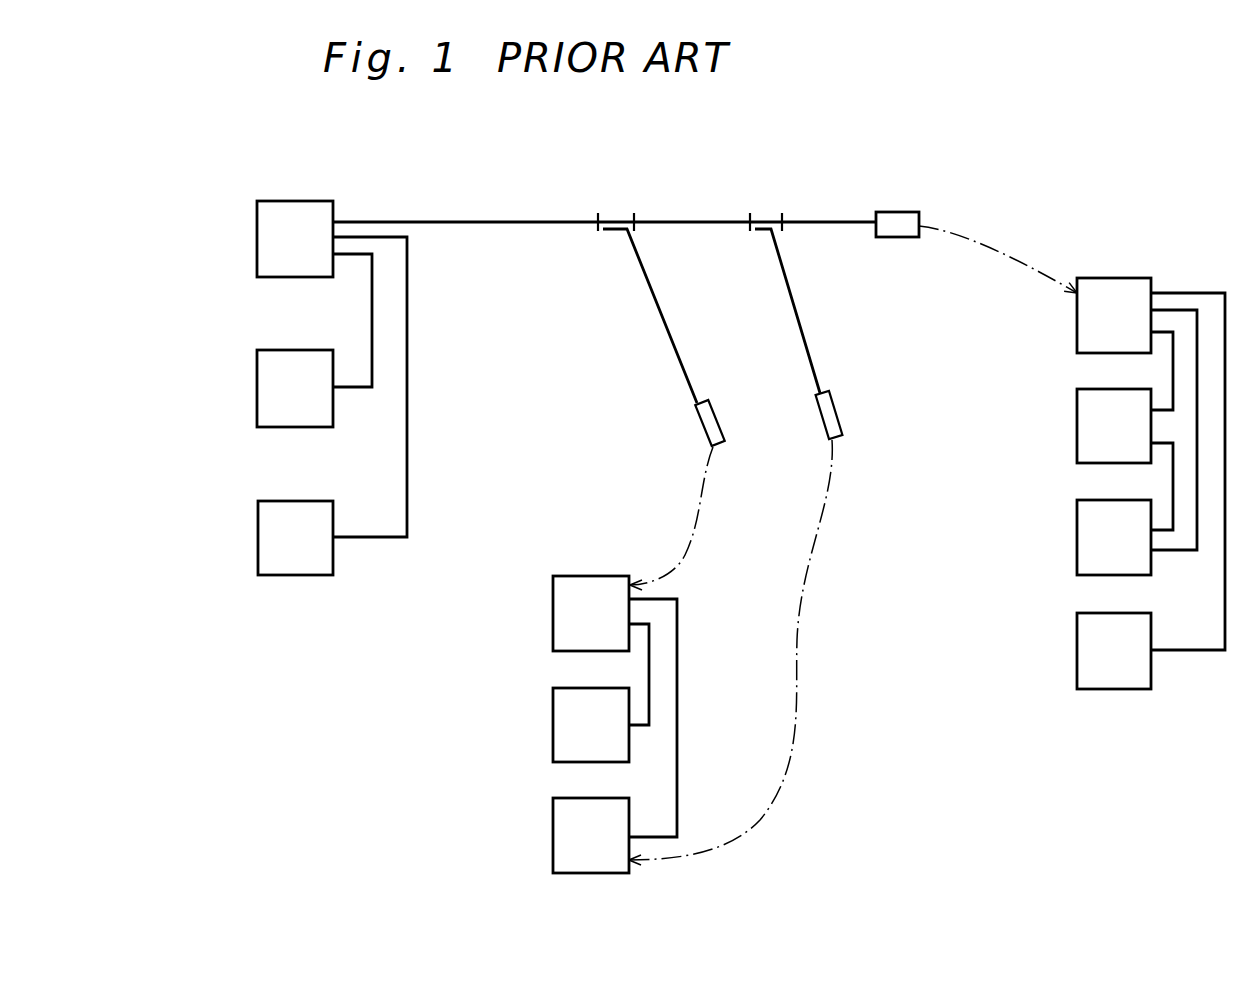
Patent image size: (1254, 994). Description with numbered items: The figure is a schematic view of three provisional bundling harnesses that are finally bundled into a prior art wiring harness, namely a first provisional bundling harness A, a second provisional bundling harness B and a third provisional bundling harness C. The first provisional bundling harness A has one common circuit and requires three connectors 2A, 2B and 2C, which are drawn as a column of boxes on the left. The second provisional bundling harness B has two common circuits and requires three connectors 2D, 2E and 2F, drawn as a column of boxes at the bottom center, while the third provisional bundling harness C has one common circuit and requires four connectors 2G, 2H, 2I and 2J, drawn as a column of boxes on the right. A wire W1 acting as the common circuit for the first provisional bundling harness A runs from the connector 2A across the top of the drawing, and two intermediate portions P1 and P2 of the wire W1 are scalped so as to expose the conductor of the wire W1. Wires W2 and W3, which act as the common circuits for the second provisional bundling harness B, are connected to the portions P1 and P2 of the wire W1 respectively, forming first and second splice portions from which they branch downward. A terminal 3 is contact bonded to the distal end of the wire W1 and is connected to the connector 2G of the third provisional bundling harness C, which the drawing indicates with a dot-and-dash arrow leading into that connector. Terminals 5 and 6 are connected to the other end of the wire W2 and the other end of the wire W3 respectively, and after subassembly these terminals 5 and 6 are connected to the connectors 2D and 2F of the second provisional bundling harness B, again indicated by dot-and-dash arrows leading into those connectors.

The first provisional bundling harness A is at (565, 175).
The second provisional bundling harness B is at (600, 545).
The third provisional bundling harness C is at (1145, 237).
The connector 2A is at (257, 240).
The connector 2B is at (257, 388).
The connector 2C is at (258, 536).
The connector 2D is at (553, 620).
The connector 2E is at (553, 731).
The connector 2F is at (553, 843).
The connector 2G is at (1077, 325).
The connector 2H is at (1077, 431).
The connector 2I is at (1077, 540).
The connector 2J is at (1077, 653).
The terminal 3 is at (897, 238).
The terminal 5 is at (715, 447).
The terminal 6 is at (835, 417).
The intermediate portion of wire W1 P1 is at (617, 217).
The intermediate portion of wire W1 P2 is at (765, 213).
The wire W1 is at (522, 224).
The wire W2 is at (667, 335).
The wire W3 is at (797, 323).